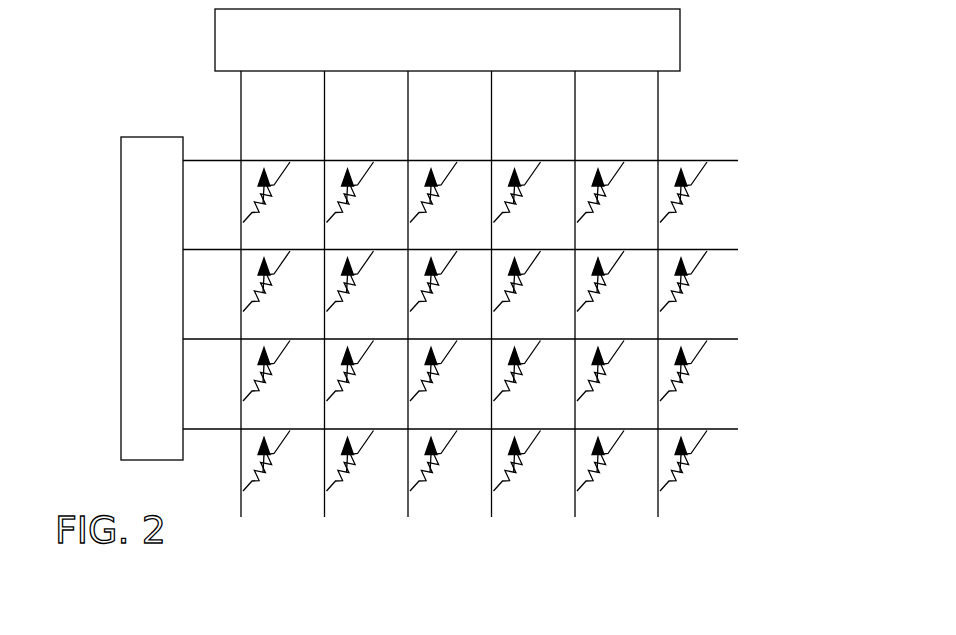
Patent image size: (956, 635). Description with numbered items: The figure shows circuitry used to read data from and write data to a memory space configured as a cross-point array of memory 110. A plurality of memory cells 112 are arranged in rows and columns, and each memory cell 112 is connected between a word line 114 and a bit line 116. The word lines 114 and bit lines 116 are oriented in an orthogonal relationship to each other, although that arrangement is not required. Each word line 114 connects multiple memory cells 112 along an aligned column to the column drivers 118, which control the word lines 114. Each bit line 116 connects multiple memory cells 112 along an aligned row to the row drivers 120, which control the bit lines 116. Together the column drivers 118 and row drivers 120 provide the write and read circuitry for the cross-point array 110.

The cross-point array of memory 110 is at (762, 64).
The memory cell 112 is at (603, 471).
The word line 114 is at (489, 506).
The bit line 116 is at (724, 339).
The column drivers 118 is at (215, 43).
The row drivers 120 is at (141, 137).